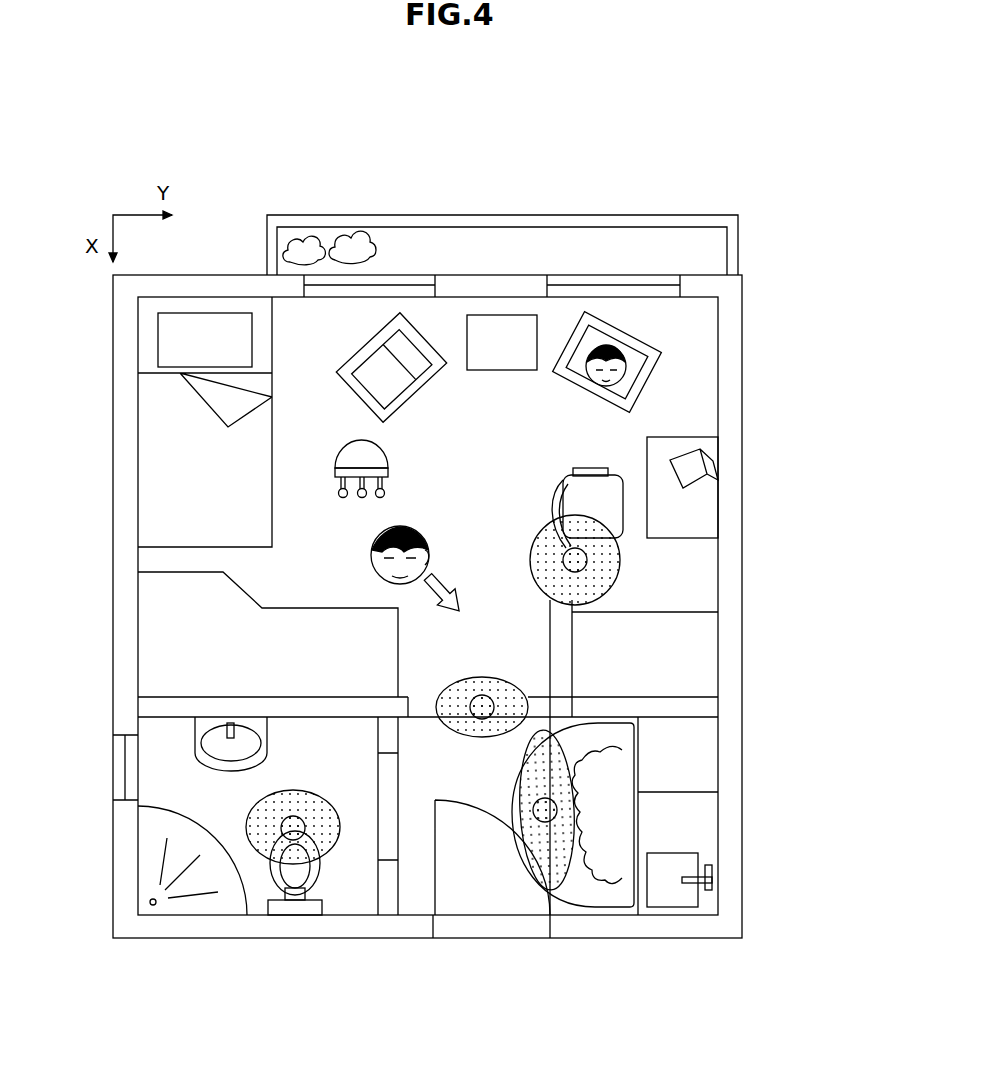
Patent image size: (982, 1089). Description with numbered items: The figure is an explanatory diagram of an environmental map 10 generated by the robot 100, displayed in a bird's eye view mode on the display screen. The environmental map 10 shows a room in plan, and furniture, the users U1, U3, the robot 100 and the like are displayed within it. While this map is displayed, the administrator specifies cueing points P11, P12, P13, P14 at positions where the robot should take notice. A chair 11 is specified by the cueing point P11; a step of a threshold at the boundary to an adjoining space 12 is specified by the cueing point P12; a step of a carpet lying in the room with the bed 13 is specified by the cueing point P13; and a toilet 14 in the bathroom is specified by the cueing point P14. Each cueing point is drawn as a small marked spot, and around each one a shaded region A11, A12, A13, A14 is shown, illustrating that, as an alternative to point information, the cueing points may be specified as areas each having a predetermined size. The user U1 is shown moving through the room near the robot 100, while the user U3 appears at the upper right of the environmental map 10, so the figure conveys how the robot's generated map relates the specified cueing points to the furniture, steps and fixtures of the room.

The environmental map 10 is at (438, 192).
The robot 100 is at (337, 457).
The user U1 is at (373, 542).
The user U3 is at (627, 343).
The chair 11 is at (607, 487).
The area around position P11 A11 is at (620, 560).
The cueing point P11 is at (582, 568).
The area around position P12 A12 is at (493, 678).
The cueing point P12 is at (490, 700).
The area around position P13 A13 is at (572, 764).
The cueing point P13 is at (558, 813).
The area around position P14 A14 is at (295, 862).
The cueing point P14 is at (280, 835).
The room / entrance area 12 is at (427, 708).
The bed 13 is at (602, 898).
The toilet 14 is at (310, 908).